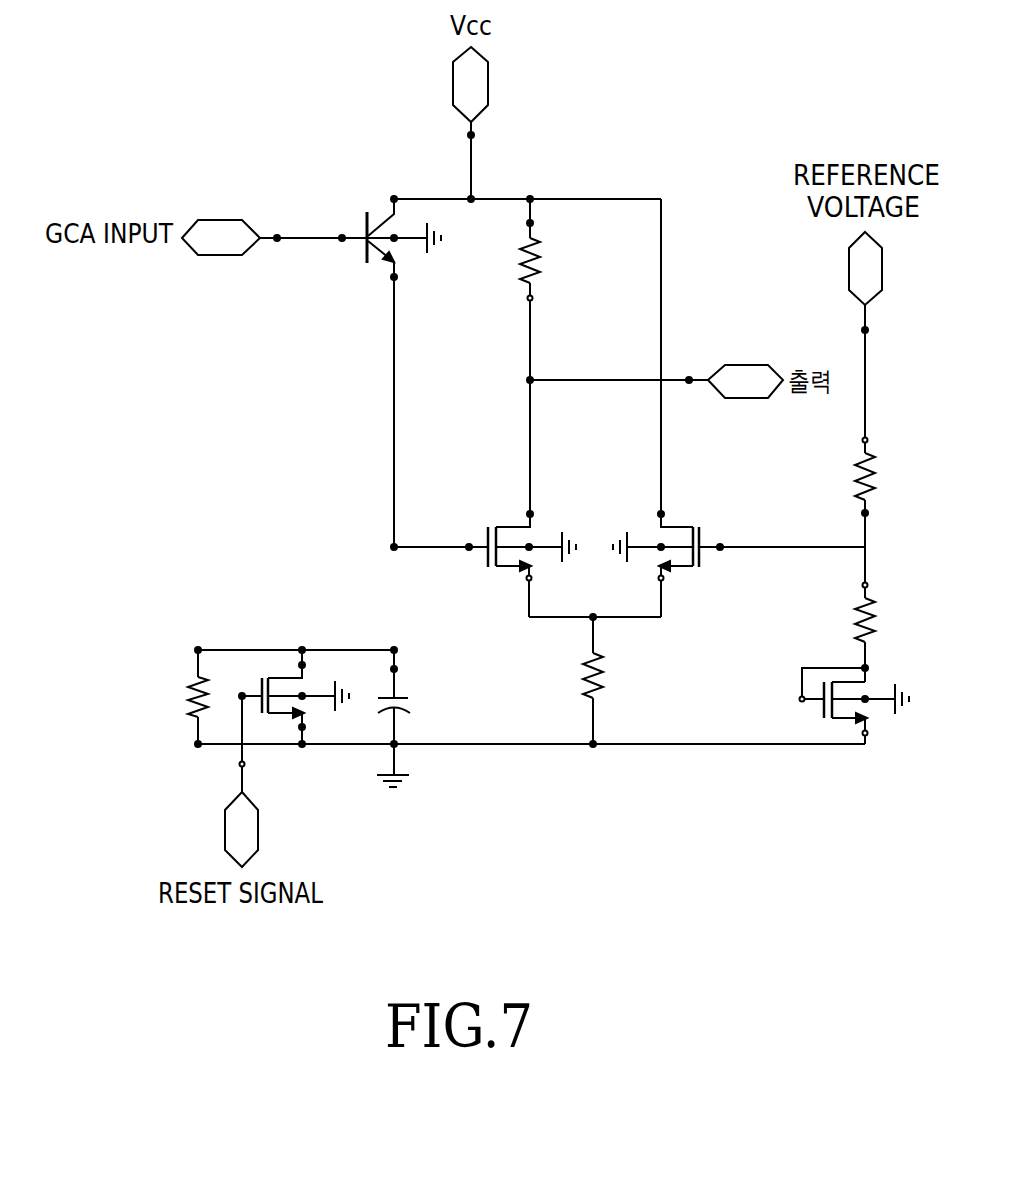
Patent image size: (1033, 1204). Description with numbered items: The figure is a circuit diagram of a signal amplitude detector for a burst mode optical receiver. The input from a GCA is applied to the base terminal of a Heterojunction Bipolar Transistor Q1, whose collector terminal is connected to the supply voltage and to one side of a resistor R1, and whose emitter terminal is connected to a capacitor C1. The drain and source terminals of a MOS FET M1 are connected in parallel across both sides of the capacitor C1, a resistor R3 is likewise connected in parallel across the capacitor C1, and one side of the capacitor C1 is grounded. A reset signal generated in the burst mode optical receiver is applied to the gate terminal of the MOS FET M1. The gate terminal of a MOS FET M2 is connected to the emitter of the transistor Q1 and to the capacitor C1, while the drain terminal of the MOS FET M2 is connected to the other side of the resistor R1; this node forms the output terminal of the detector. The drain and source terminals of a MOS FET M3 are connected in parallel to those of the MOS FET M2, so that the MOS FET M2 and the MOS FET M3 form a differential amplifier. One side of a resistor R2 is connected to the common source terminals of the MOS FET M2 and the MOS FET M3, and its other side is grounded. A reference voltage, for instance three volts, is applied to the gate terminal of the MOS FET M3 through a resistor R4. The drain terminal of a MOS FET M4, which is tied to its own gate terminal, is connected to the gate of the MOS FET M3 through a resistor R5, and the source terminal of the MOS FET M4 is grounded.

The Heterojunction Bipolar Transistor Q1 is at (392, 359).
The resistor R1 is at (549, 356).
The resistor R2 is at (613, 679).
The resistor R3 is at (180, 697).
The resistor R4 is at (886, 500).
The resistor R5 is at (886, 614).
The MOS FET M1 is at (294, 677).
The MOS FET M2 is at (521, 553).
The MOS FET M3 is at (653, 553).
The MOS FET M4 is at (856, 713).
The capacitor C1 is at (412, 718).